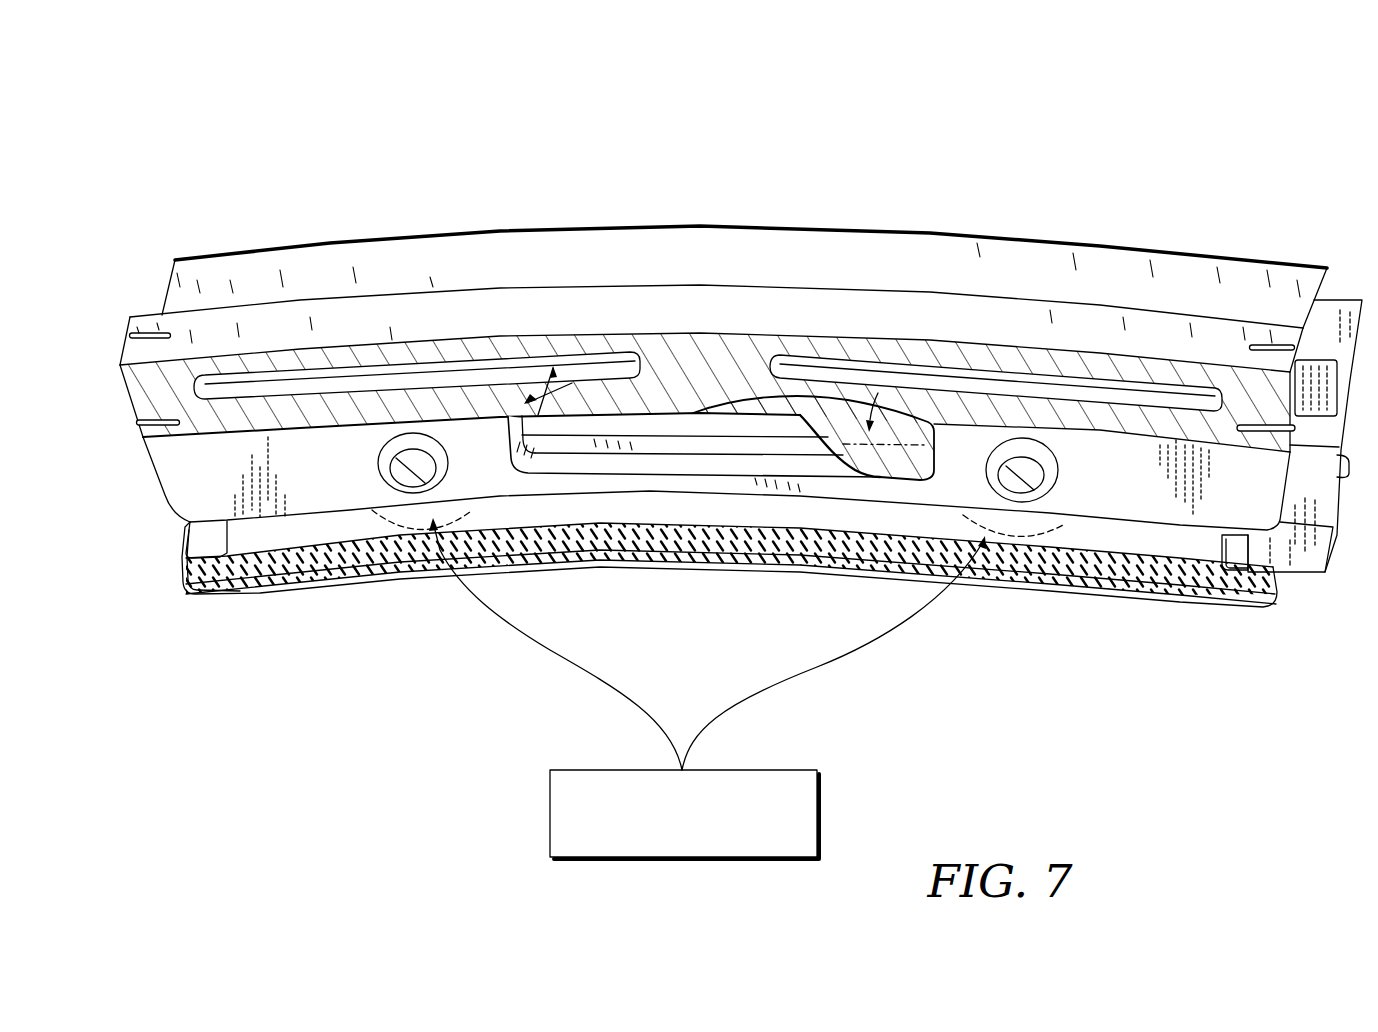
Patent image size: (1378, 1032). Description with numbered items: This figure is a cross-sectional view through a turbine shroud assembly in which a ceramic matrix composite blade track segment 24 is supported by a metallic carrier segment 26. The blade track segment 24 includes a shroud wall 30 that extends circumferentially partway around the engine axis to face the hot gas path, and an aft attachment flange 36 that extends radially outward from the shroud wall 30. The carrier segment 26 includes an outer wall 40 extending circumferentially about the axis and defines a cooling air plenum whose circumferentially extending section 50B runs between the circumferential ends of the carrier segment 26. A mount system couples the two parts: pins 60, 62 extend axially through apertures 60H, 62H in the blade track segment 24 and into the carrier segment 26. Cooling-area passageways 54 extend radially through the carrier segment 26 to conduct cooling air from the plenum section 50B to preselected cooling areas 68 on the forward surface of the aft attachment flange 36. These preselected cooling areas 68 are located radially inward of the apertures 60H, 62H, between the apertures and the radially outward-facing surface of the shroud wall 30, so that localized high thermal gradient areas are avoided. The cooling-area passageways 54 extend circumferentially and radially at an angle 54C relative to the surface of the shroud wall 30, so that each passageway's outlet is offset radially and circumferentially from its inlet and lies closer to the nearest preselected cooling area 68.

The blade track segment 24 is at (1133, 700).
The carrier segment 26 is at (958, 137).
The shroud wall 30 is at (1009, 596).
The aft attachment flange 36 is at (190, 485).
The outer wall 40 is at (1004, 325).
The circumferentially extending section of cooling air plenum 50B is at (448, 368).
The cooling-area passageways 54 is at (690, 130).
The angle 54C is at (583, 414).
The pin 60 is at (398, 476).
The aperture 60H is at (372, 460).
The pin 62 is at (1043, 486).
The aperture 62H is at (1070, 472).
The preselected cooling areas 68 is at (607, 770).